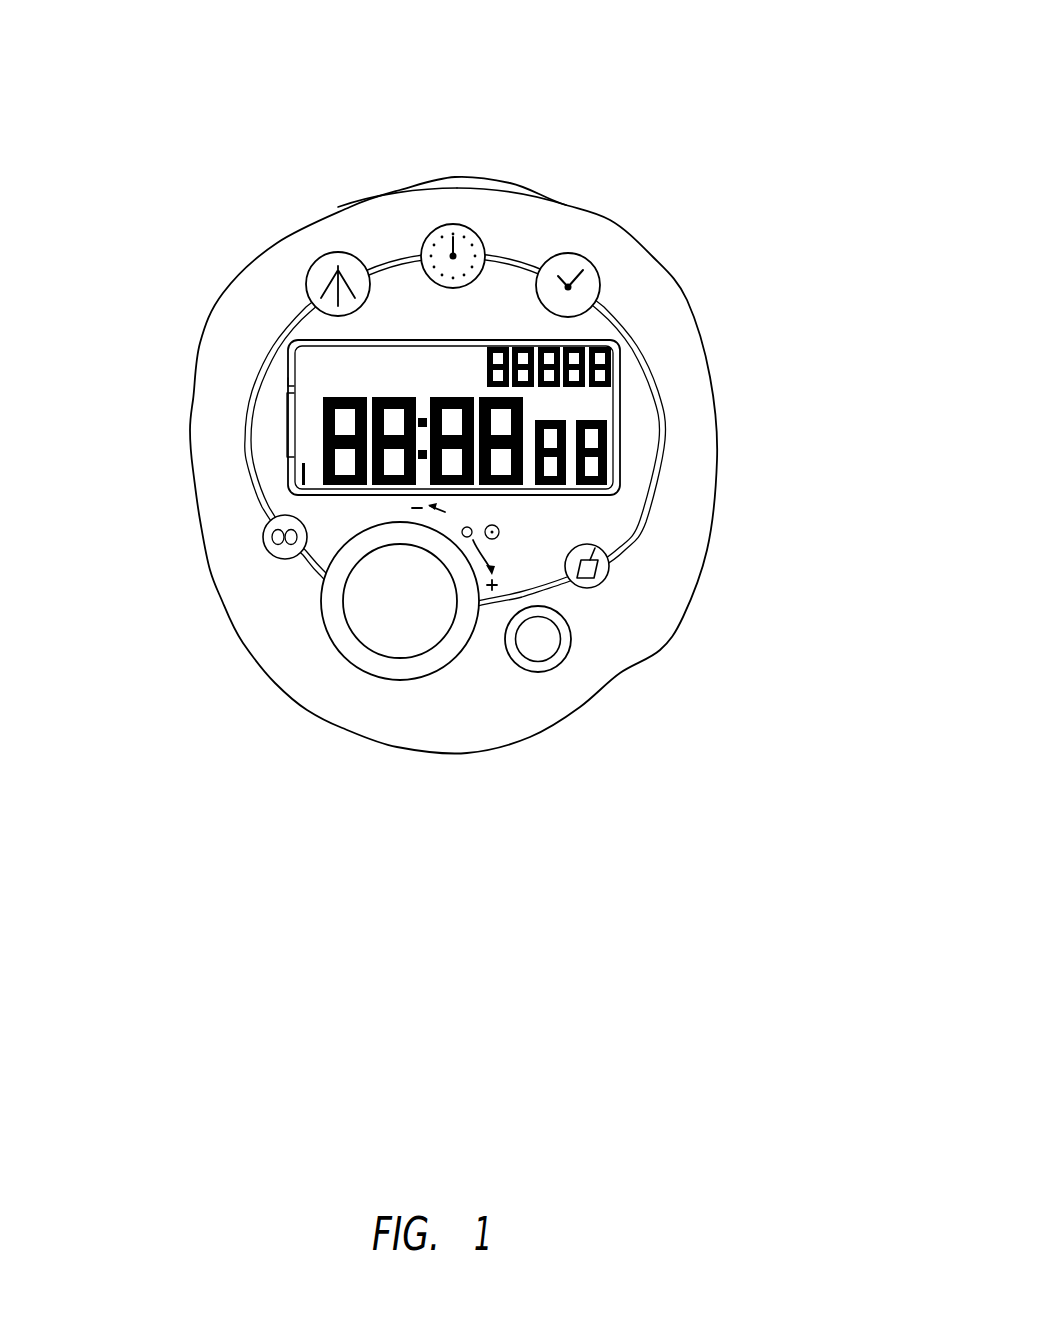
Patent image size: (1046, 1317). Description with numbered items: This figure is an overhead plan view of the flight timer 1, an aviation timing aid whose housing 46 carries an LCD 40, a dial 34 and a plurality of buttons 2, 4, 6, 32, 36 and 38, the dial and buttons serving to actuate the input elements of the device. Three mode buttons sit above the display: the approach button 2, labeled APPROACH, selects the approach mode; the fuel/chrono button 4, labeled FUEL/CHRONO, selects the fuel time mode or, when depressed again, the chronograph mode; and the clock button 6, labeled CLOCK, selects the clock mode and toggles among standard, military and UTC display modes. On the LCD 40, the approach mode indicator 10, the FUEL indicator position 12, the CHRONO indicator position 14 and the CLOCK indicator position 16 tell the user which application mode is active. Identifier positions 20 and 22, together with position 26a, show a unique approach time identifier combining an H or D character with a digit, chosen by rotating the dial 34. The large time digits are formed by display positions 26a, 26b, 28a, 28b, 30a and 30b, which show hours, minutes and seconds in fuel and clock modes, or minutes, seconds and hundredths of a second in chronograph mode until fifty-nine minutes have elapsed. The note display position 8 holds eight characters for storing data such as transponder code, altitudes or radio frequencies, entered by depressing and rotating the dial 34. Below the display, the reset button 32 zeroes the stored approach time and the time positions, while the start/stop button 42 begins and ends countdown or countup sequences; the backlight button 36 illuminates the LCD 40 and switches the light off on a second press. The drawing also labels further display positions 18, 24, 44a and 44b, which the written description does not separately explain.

The flight timer 1 is at (709, 40).
The approach button 2 is at (342, 252).
The fuel/chrono button 4 is at (462, 240).
The clock button 6 is at (603, 272).
The note display position 8 is at (613, 343).
The approach mode indicator 10 is at (267, 380).
The FUEL indicator position 12 is at (293, 348).
The CHRONO indicator position 14 is at (396, 357).
The CLOCK indicator position 16 is at (470, 348).
The clock label 18 is at (560, 258).
The identifier display position 20 is at (293, 410).
The identifier display position 22 is at (297, 442).
The indicator bar 24 is at (292, 465).
The display position 26a is at (297, 513).
The display position 26b is at (293, 549).
The display position 28a is at (413, 510).
The display position 28b is at (492, 592).
The display position 30a is at (603, 507).
The display position 30b is at (607, 473).
The reset button 32 is at (267, 547).
The dial 34 is at (370, 658).
The backlight button 36 is at (557, 660).
The button 38 is at (600, 592).
The LCD 40 is at (620, 410).
The start/stop button 42 is at (518, 190).
The AM indicator 44a is at (557, 400).
The PM indicator 44b is at (597, 400).
The housing 46 is at (217, 395).